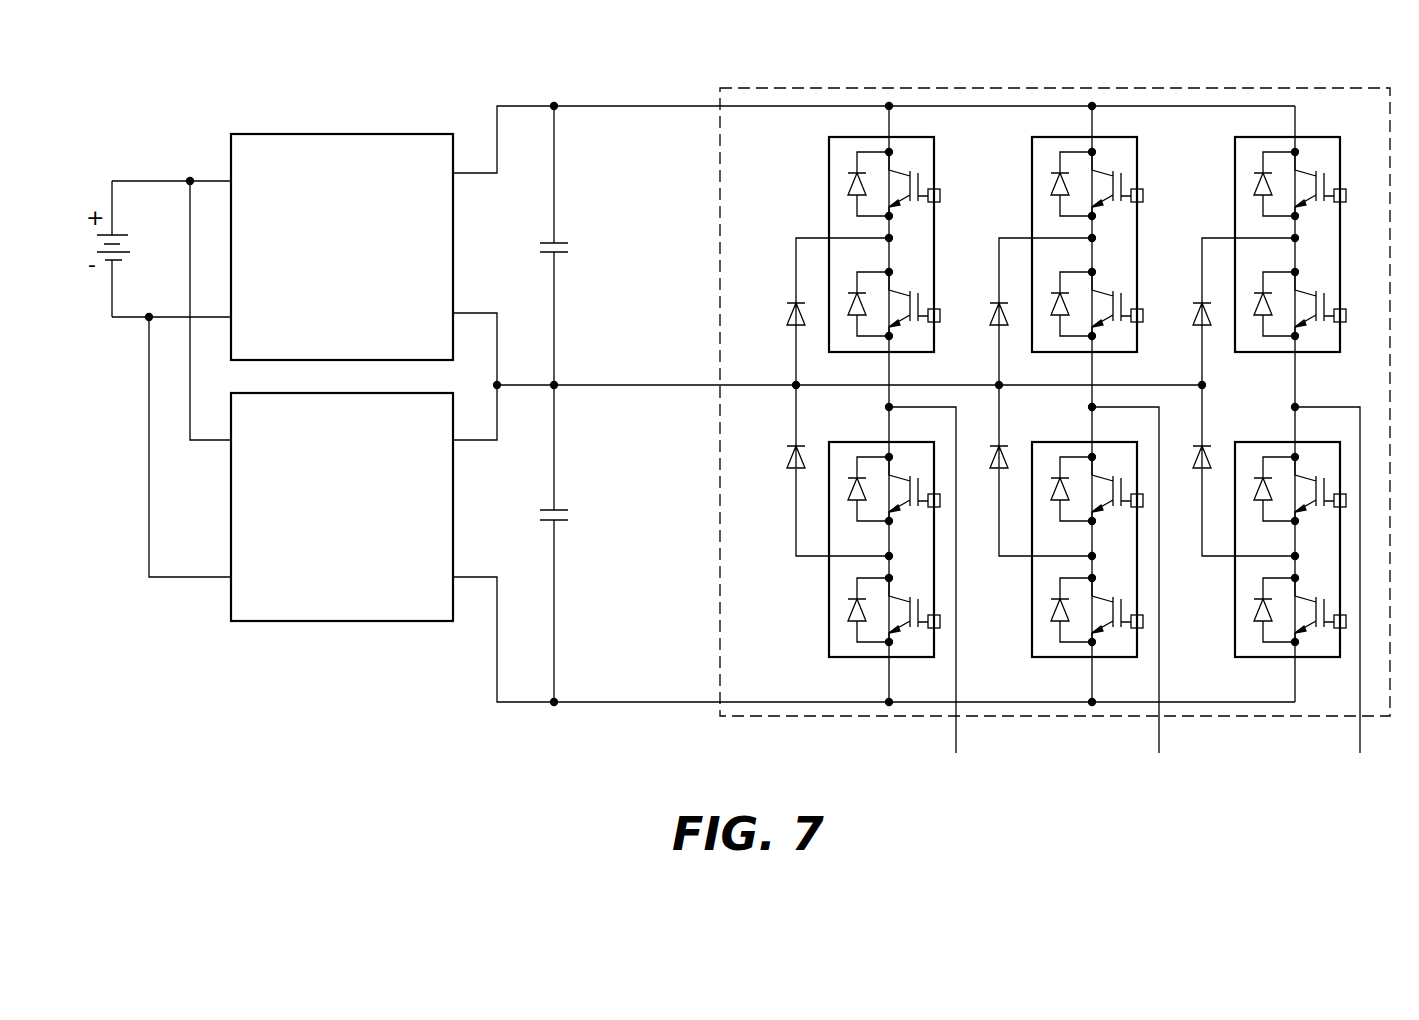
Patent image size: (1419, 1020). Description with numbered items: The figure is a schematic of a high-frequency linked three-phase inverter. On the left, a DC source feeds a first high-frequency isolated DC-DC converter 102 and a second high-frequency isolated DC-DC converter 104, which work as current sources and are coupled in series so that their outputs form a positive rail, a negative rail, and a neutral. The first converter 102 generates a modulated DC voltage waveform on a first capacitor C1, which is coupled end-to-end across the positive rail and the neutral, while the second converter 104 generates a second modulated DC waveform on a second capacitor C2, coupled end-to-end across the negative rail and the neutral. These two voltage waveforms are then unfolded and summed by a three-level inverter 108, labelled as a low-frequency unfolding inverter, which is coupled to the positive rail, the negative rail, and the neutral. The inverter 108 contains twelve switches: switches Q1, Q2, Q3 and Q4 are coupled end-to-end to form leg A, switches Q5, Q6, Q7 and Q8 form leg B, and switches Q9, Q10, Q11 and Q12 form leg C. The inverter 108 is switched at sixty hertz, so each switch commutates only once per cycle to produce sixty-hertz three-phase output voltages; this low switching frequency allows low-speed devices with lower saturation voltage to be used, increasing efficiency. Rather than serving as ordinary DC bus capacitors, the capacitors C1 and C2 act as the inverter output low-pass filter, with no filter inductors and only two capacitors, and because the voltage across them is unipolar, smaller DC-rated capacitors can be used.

The first high-frequency isolated DC-DC converter 102 is at (324, 133).
The second high-frequency isolated DC-DC converter 104 is at (312, 622).
The three-level inverter 108 is at (792, 88).
The first capacitor C1 is at (560, 242).
The second capacitor C2 is at (560, 522).
The switch Q1 is at (884, 164).
The switch Q2 is at (884, 329).
The switch Q3 is at (884, 469).
The switch Q4 is at (884, 636).
The switch Q5 is at (1087, 164).
The switch Q6 is at (1087, 329).
The switch Q7 is at (1087, 469).
The switch Q8 is at (1087, 636).
The switch Q9 is at (1290, 164).
The switch Q10 is at (1290, 329).
The switch Q11 is at (1290, 469).
The switch Q12 is at (1290, 636).